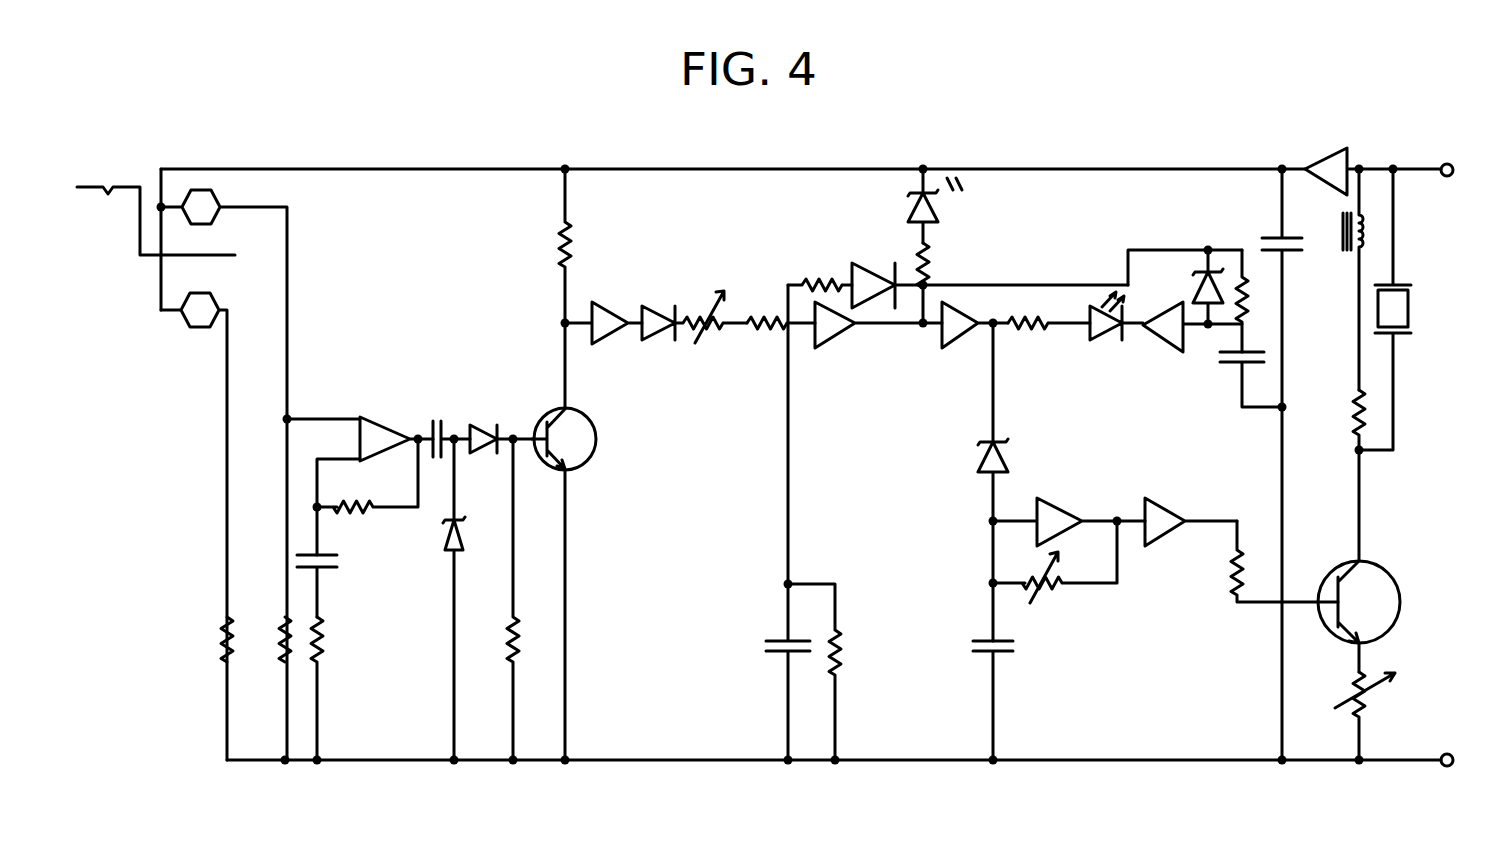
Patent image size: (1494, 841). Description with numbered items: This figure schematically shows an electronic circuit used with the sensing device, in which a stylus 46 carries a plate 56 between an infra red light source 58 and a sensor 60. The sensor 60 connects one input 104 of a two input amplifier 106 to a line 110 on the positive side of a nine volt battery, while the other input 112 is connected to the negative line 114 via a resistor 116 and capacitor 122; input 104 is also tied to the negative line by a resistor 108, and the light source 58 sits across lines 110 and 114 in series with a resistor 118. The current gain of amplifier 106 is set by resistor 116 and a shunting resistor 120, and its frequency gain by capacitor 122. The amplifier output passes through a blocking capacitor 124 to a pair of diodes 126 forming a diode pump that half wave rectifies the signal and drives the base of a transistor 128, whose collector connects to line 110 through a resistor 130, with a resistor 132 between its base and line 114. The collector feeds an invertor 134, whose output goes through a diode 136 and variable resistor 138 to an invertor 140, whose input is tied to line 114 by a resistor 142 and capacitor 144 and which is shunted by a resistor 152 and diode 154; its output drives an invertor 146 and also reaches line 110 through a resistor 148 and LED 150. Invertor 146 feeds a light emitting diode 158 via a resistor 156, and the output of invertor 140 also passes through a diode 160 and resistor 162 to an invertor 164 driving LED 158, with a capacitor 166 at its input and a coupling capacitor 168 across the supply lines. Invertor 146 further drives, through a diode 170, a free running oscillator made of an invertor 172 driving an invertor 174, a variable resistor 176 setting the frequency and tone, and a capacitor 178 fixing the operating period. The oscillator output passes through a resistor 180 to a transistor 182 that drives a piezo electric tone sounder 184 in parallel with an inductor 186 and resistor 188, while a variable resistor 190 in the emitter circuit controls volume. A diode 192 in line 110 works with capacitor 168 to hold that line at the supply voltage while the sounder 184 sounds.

The stylus 46 is at (122, 186).
The plate 56 is at (235, 255).
The light source 58 is at (200, 327).
The sensor 60 is at (210, 190).
The input 104 is at (360, 418).
The two input amplifier 106 is at (382, 420).
The resistor 108 is at (296, 665).
The line 110 is at (488, 168).
The other input 112 is at (360, 460).
The line 114 is at (390, 760).
The resistor 116 is at (321, 661).
The resistor 118 is at (228, 660).
The resistor 120 is at (355, 508).
The capacitor 122 is at (337, 567).
The blocking capacitor 124 is at (437, 420).
The diode 126 is at (447, 553).
The transistor 128 is at (593, 423).
The resistor 130 is at (576, 249).
The resistor 132 is at (525, 632).
The invertor 134 is at (607, 304).
The diode 136 is at (658, 303).
The variable resistor 138 is at (707, 340).
The invertor 140 is at (838, 348).
The resistor 142 is at (842, 638).
The capacitor 144 is at (772, 640).
The invertor 146 is at (962, 348).
The resistor 148 is at (938, 262).
The LED 150 is at (939, 213).
The resistor 152 is at (813, 280).
The diode 154 is at (876, 310).
The resistor 156 is at (1035, 338).
The light emitting diode 158 is at (1095, 300).
The diode 160 is at (1195, 295).
The resistor 162 is at (1240, 320).
The invertor 164 is at (1168, 353).
The capacitor 166 is at (1230, 366).
The coupling capacitor 168 is at (1270, 237).
The diode 170 is at (1012, 454).
The invertor 172 is at (1067, 512).
The invertor 174 is at (1171, 500).
The variable resistor 176 is at (1057, 595).
The capacitor 178 is at (1007, 662).
The resistor 180 is at (1232, 568).
The transistor 182 is at (1379, 563).
The piezo electric tone sounder 184 is at (1412, 304).
The inductor 186 is at (1343, 228).
The resistor 188 is at (1350, 412).
The variable resistor 190 is at (1368, 670).
The diode 192 is at (1348, 148).